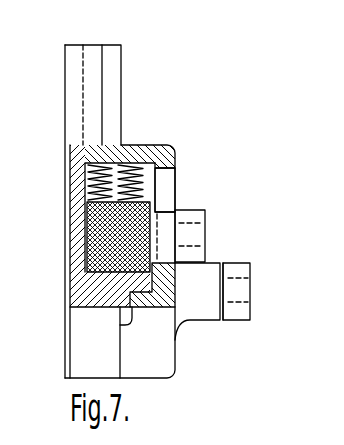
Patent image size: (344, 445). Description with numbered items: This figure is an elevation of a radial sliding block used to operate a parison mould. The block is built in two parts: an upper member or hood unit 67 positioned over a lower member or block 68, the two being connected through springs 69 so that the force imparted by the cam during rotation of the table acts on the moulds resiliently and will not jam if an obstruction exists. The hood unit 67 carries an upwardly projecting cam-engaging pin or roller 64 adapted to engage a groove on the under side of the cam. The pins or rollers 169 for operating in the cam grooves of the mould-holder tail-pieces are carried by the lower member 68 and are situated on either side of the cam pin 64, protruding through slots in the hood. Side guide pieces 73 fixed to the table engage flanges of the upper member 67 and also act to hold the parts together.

The side guide piece 73 is at (113, 93).
The lower member or block 68 is at (85, 293).
The spring 69 is at (88, 183).
The upper member or hood unit 67 is at (165, 181).
The tail-piece pin or roller 169 is at (190, 233).
The cam-engaging pin or roller 64 is at (240, 292).